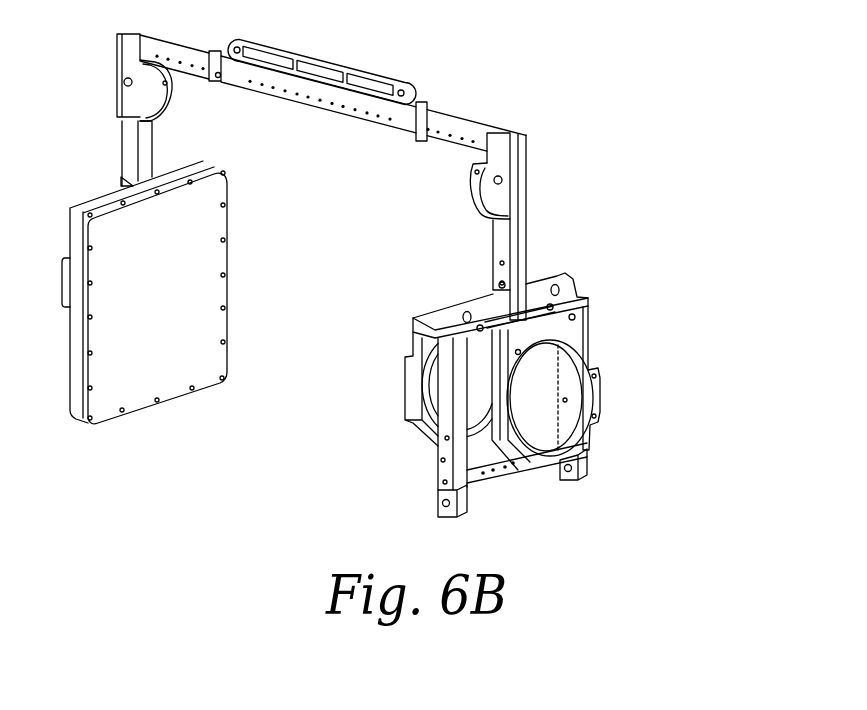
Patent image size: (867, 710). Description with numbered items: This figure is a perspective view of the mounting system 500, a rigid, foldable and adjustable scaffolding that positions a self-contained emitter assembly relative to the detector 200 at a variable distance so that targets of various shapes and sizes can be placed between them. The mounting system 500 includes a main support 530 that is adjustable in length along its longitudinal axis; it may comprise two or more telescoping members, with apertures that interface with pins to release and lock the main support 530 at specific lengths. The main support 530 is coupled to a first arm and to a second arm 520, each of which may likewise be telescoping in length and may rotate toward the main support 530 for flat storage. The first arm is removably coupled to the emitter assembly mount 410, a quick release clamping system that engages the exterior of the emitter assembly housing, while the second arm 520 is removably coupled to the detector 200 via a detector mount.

The mounting system 500 is at (511, 87).
The second arm 520 is at (125, 153).
The main support 530 is at (300, 105).
The emitter assembly mount 410 is at (408, 408).
The detector 200 is at (165, 400).